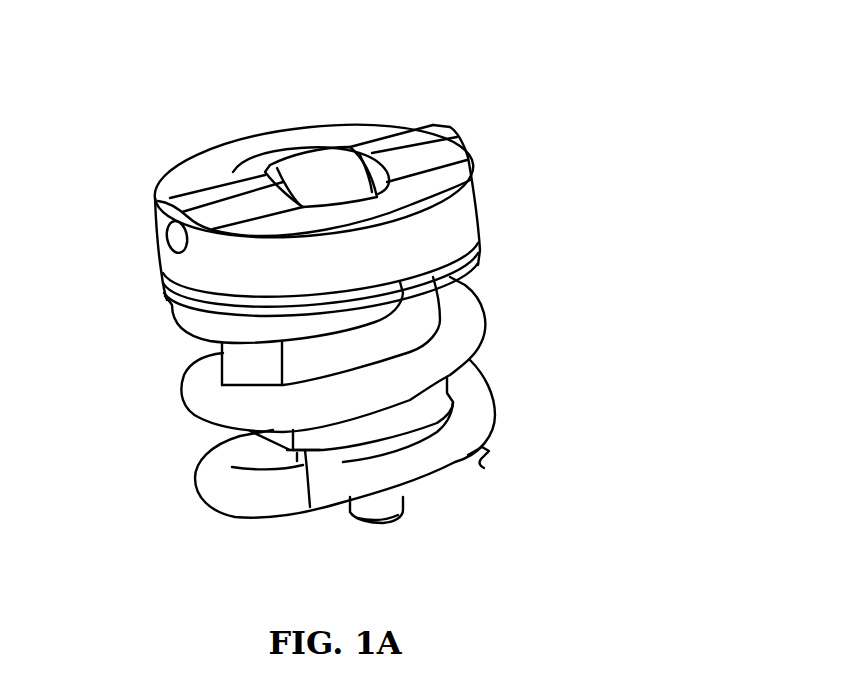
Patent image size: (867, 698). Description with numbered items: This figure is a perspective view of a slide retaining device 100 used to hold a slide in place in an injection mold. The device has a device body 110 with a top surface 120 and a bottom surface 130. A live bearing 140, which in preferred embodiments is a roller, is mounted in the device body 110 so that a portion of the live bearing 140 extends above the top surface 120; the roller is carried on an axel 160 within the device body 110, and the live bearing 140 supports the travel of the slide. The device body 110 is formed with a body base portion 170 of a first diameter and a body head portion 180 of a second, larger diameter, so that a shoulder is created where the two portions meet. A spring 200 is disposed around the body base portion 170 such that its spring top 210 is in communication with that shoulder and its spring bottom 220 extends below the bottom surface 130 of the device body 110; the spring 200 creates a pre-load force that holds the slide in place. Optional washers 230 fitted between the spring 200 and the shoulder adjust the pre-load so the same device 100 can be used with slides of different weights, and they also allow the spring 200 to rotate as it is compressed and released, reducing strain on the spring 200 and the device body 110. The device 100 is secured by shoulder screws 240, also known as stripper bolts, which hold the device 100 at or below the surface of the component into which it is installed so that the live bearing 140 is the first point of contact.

The slide retaining device 100 is at (205, 110).
The device body 110 is at (472, 162).
The top surface 120 is at (437, 120).
The bottom surface 130 is at (312, 507).
The live bearing 140 is at (337, 138).
The axel 160 is at (173, 243).
The body base portion 170 is at (452, 393).
The body head portion 180 is at (467, 198).
The spring 200 is at (490, 322).
The spring top 210 is at (173, 310).
The spring bottom 220 is at (484, 468).
The washers 230 is at (478, 247).
The shoulder screws 240 is at (400, 508).